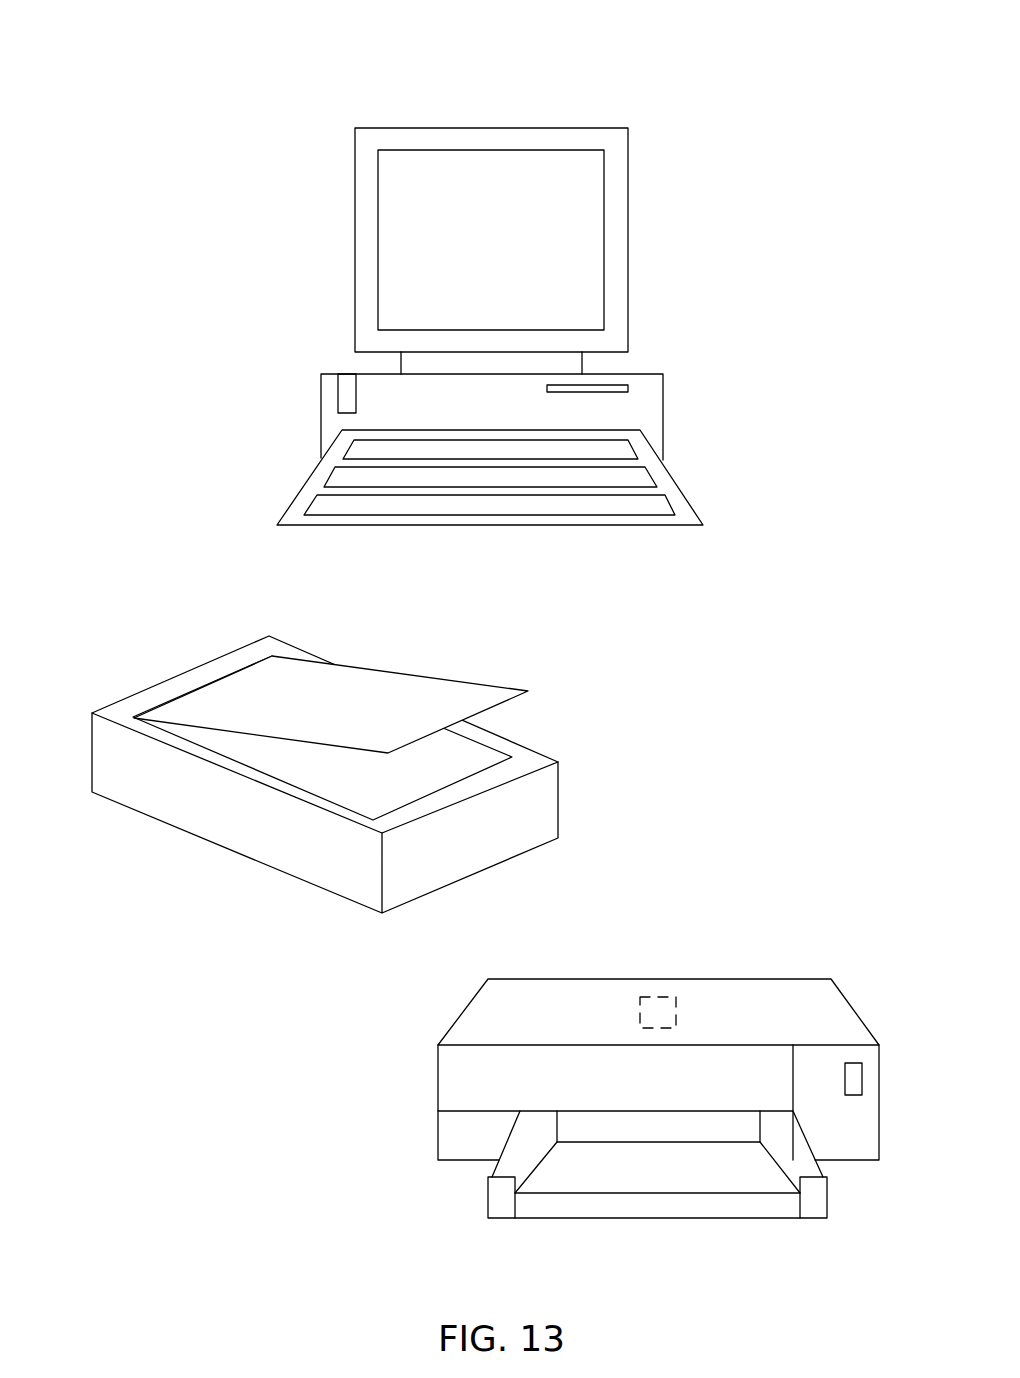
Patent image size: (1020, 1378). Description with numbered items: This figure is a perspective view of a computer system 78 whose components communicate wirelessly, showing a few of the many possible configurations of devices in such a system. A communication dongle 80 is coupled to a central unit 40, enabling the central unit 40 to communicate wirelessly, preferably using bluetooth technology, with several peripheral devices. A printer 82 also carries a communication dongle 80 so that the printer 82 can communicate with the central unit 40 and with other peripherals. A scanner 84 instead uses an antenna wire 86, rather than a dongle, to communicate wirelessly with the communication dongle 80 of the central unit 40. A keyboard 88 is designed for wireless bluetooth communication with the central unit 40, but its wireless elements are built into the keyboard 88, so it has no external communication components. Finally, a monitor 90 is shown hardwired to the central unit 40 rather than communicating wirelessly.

The computer system 78 is at (435, 38).
The monitor 90 is at (622, 193).
The central unit 40 is at (655, 407).
The communication dongle 80 is at (343, 377).
The keyboard 88 is at (680, 488).
The antenna wire 86 is at (92, 744).
The scanner 84 is at (388, 697).
The printer 82 is at (780, 978).